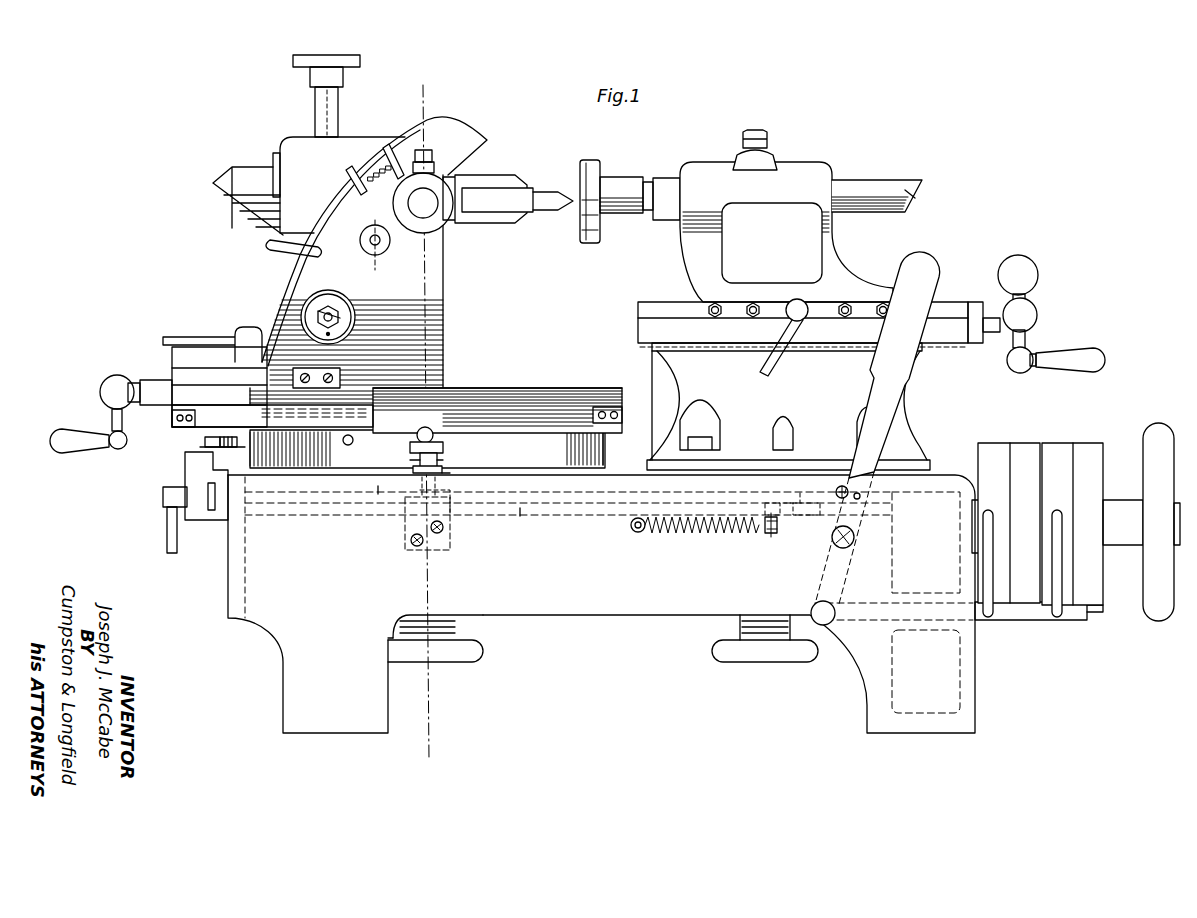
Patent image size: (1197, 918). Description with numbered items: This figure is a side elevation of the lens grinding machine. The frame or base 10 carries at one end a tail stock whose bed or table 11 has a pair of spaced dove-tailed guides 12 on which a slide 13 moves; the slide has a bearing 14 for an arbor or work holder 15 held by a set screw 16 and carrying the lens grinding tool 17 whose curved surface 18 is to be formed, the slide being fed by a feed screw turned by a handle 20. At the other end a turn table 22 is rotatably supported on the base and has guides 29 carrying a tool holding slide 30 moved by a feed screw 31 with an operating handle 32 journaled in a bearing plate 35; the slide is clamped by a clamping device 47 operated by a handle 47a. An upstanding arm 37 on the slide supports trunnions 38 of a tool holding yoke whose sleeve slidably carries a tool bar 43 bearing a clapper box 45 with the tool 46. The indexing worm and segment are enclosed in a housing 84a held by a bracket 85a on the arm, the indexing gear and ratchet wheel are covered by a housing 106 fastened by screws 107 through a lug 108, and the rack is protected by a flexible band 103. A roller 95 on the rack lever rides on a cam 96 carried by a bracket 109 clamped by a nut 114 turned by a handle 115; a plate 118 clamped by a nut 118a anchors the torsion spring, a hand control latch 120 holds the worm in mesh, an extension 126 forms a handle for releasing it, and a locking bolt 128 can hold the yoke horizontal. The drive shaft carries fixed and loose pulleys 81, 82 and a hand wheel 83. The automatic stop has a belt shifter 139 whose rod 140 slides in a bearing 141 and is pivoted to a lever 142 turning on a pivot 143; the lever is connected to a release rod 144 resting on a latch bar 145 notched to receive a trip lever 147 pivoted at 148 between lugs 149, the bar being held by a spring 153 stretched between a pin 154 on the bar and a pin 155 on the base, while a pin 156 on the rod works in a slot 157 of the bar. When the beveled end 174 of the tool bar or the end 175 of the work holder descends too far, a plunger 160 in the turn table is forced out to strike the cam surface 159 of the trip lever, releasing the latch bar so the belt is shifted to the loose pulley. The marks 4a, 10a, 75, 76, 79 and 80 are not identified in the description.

The section line 4a is at (425, 414).
The frame or base 10 is at (620, 603).
The index marks 10a is at (410, 163).
The bed or table 11 is at (845, 395).
The dove-tailed guides 12 is at (658, 307).
The slide 13 is at (842, 273).
The bearing 14 is at (800, 175).
The arbor or work holder 15 is at (866, 184).
The set screw 16 is at (755, 130).
The work or lens grinding tool 17 is at (594, 241).
The curved surface 18 is at (577, 226).
The handle 20 is at (1058, 352).
The table or support 22 is at (607, 440).
The guides 29 is at (518, 390).
The tool holding slide 30 is at (172, 362).
The feed screw 31 is at (135, 385).
The operating handle 32 is at (72, 430).
The bearing plate 35 is at (207, 443).
The upstanding arm 37 is at (437, 298).
The trunnions 38 is at (420, 208).
The tool bar or arbor 43 is at (450, 224).
The clapper box 45 is at (493, 189).
The tool 46 is at (558, 196).
The clamping device 47 is at (250, 330).
The handle 47a is at (190, 340).
The foot 75 is at (472, 655).
The pad 76 is at (480, 617).
The foot 79 is at (770, 647).
The pad 80 is at (740, 619).
The fixed pulley 81 is at (1012, 450).
The loose pulley 82 is at (1087, 452).
The hand wheel 83 is at (1166, 630).
The housing 84a is at (390, 123).
The bracket 85a is at (393, 156).
The roller 95 is at (213, 447).
The cam 96 is at (213, 447).
The flexible band 103 is at (570, 416).
The housing 106 is at (318, 420).
The screws 107 is at (305, 384).
The lug 108 is at (322, 382).
The block or bracket 109 is at (187, 468).
The nut 114 is at (165, 497).
The handle 115 is at (170, 540).
The plate 118 is at (327, 292).
The nut 118a is at (352, 308).
The hand control latch or lever 120 is at (283, 250).
The extension 126 is at (313, 97).
The locking bolt 128 is at (361, 244).
The belt shifter 139 is at (1087, 608).
The rod 140 is at (870, 604).
The bearing 141 is at (926, 640).
The lever 142 is at (880, 430).
The pivot 143 is at (854, 534).
The release rod 144 is at (605, 446).
The latch bar 145 is at (558, 517).
The trip lever 147 is at (415, 488).
The pivot 148 is at (450, 472).
The upstanding lugs 149 is at (410, 460).
The spring 153 is at (700, 535).
The pin 154 is at (765, 537).
The pin 155 is at (634, 533).
The pin 156 is at (836, 537).
The slot 157 is at (792, 505).
The cam or inclined surface 159 is at (440, 443).
The spring-pressed plunger 160 is at (424, 431).
The beveled end 174 is at (225, 200).
The end 175 is at (913, 195).